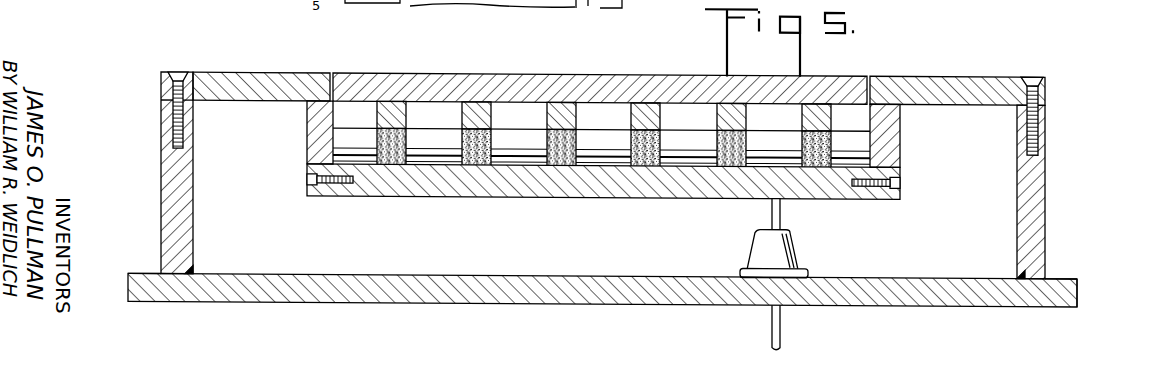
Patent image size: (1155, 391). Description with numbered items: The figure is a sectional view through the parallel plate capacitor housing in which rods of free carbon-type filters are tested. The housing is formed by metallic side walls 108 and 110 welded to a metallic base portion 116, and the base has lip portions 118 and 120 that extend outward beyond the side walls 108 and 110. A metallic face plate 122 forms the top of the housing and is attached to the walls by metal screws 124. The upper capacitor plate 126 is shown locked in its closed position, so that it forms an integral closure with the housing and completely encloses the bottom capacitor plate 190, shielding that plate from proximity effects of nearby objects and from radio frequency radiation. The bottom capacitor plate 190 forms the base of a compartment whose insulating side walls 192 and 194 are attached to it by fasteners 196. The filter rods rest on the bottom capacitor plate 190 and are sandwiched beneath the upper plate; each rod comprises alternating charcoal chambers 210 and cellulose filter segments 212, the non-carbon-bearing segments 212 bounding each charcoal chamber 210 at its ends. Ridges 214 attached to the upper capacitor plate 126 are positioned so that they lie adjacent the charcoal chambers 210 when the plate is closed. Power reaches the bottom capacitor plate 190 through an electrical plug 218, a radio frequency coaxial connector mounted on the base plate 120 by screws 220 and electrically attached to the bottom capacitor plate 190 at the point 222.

The side wall 108 is at (167, 160).
The side wall 110 is at (1046, 176).
The base portion 116 is at (533, 283).
The lip portion 118 is at (143, 272).
The lip portion 120 is at (1078, 278).
The face plate 122 is at (947, 68).
The metal screws 124 is at (186, 78).
The upper capacitor plate 126 is at (630, 80).
The bottom capacitor plate 190 is at (583, 190).
The side wall 192 is at (310, 144).
The side wall 194 is at (901, 138).
The fasteners 196 is at (901, 182).
The charcoal chambers 210 is at (393, 160).
The cellulose filter segments 212 is at (447, 158).
The ridges 214 is at (474, 109).
The electrical plug 218 is at (791, 237).
The screws 220 is at (802, 264).
The point 222 is at (779, 183).